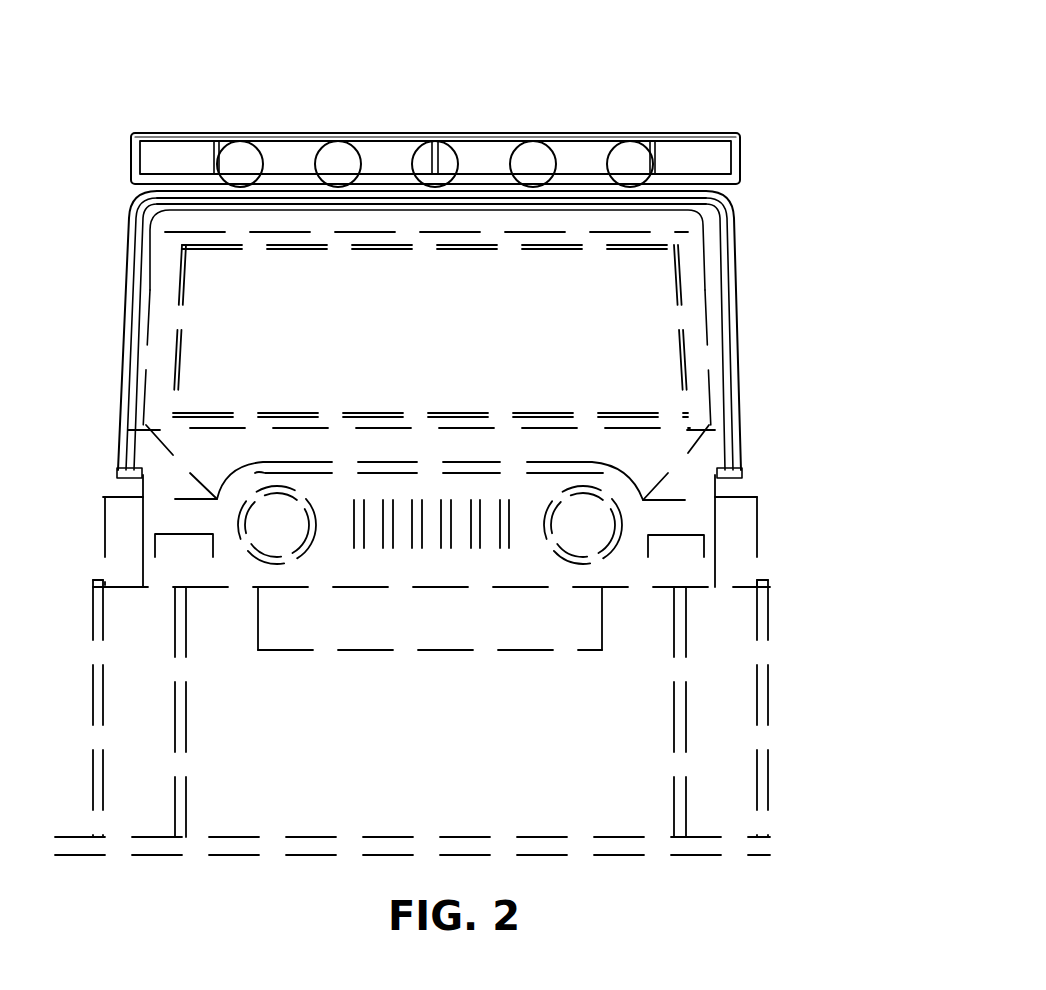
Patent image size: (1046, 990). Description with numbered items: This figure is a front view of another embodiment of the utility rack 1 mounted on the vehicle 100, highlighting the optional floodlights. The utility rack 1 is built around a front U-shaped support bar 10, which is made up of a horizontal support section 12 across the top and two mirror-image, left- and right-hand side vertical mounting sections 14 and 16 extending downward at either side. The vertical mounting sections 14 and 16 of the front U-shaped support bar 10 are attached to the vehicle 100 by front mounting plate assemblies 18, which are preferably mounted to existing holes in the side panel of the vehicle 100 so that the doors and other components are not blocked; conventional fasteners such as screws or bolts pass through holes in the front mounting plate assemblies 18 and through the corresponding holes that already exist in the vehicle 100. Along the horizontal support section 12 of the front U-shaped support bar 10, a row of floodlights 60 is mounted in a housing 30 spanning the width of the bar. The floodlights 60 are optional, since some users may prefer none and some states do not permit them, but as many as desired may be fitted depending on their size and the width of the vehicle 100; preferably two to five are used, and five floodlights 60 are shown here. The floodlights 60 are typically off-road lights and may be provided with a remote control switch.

The utility rack 1 is at (778, 72).
The front U-shaped support bar 10 is at (736, 237).
The horizontal support section 12 is at (384, 203).
The vertical mounting section 14 is at (738, 345).
The vertical mounting section 16 is at (121, 348).
The front mounting plate assemblies 18 is at (134, 450).
The light bar housing 30 is at (172, 134).
The floodlights 60 is at (242, 136).
The vehicle 100 is at (780, 556).